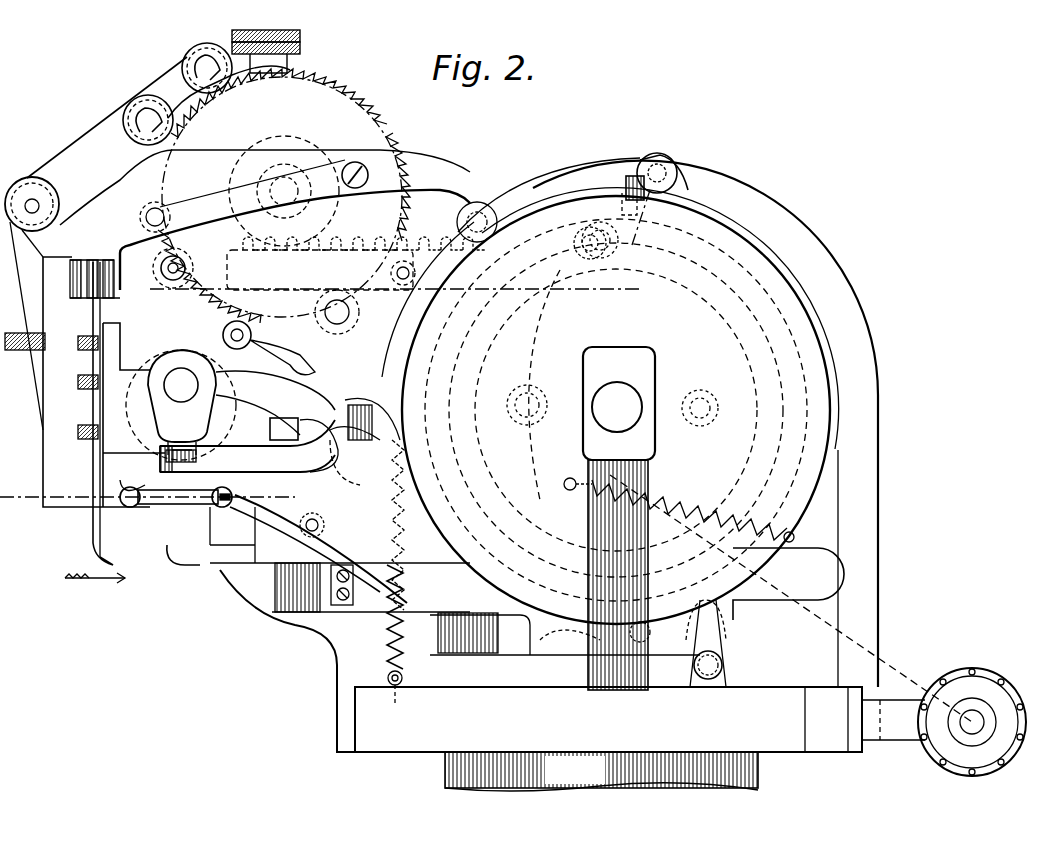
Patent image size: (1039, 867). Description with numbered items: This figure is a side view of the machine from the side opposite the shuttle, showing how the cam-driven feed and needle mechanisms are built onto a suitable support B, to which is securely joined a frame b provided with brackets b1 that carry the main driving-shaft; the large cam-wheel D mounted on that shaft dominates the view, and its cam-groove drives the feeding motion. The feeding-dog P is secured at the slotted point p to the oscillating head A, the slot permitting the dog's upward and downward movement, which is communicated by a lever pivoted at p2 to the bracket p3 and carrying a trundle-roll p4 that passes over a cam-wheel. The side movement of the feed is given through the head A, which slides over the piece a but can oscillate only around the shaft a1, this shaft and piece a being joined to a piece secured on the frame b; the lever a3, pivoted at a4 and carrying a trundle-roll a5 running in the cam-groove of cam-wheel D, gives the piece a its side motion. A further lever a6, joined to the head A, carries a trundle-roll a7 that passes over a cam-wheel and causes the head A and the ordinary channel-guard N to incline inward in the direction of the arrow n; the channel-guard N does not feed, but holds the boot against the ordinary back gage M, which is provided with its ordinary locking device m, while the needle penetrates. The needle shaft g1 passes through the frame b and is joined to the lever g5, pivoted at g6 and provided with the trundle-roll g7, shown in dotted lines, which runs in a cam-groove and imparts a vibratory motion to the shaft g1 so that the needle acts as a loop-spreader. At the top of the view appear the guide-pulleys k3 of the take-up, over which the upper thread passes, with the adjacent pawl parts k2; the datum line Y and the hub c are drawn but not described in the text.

The guide-pulleys k3 is at (205, 48).
The pawl k2 is at (295, 62).
The bracket p3 is at (237, 243).
The pivot of lever p' p2 is at (398, 170).
The trundle-roll p4 is at (598, 238).
The trundle-roll a7 is at (478, 212).
The trundle-roll a5 is at (669, 199).
The feeding-dog P is at (95, 320).
The slotted attachment point p is at (78, 343).
The oscillating head A is at (165, 365).
The piece a is at (181, 385).
The lever a6 is at (277, 421).
The pivot of lever a3 a4 is at (367, 500).
The cam-wheel D is at (620, 406).
The shaft c is at (617, 407).
The brackets b1 is at (619, 518).
The shaft a1 is at (158, 462).
The lever a3 is at (247, 447).
The axis line Y is at (148, 494).
The shaft g1 is at (168, 500).
The lever g5 is at (283, 515).
The channel-guard N is at (92, 540).
The arrow n is at (95, 588).
The back gage M is at (320, 592).
The frame b is at (362, 648).
The pivot of lever g5 g6 is at (407, 635).
The locking device m is at (530, 655).
The trundle-roll g7 is at (650, 565).
The support B is at (601, 771).